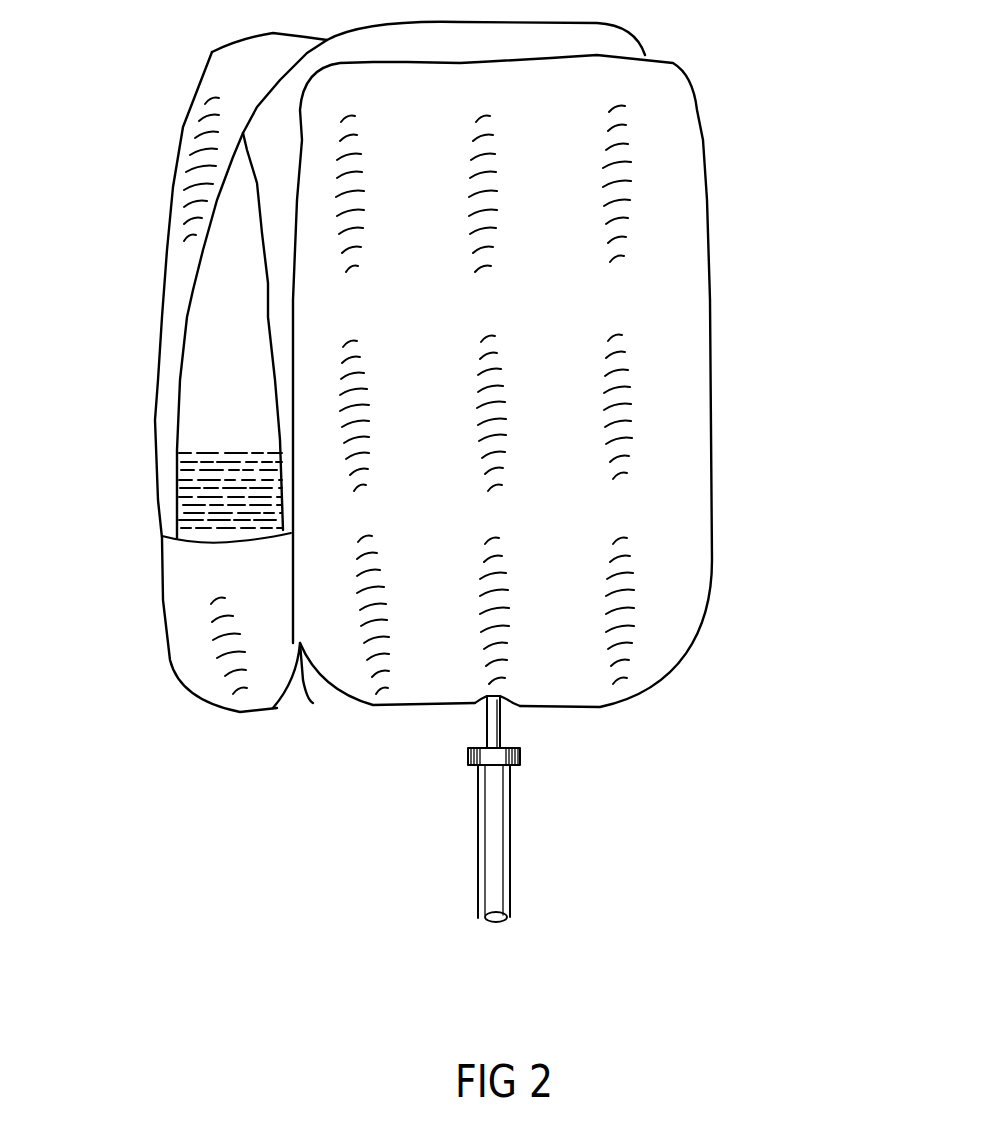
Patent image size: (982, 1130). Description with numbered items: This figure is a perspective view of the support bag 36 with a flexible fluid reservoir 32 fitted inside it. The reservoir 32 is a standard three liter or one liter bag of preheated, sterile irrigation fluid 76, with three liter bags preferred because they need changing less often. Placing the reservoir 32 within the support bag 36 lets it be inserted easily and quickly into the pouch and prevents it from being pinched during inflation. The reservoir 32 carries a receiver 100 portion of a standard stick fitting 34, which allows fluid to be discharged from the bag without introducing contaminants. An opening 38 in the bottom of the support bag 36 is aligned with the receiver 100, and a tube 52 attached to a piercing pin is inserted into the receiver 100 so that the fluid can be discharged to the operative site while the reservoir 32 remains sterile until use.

The flexible fluid reservoir 32 is at (228, 227).
The support bag 36 is at (668, 112).
The irrigation fluid 76 is at (205, 505).
The opening 38 is at (480, 702).
The receiver 100 is at (492, 720).
The stick fitting 34 is at (545, 782).
The tube 52 is at (492, 903).